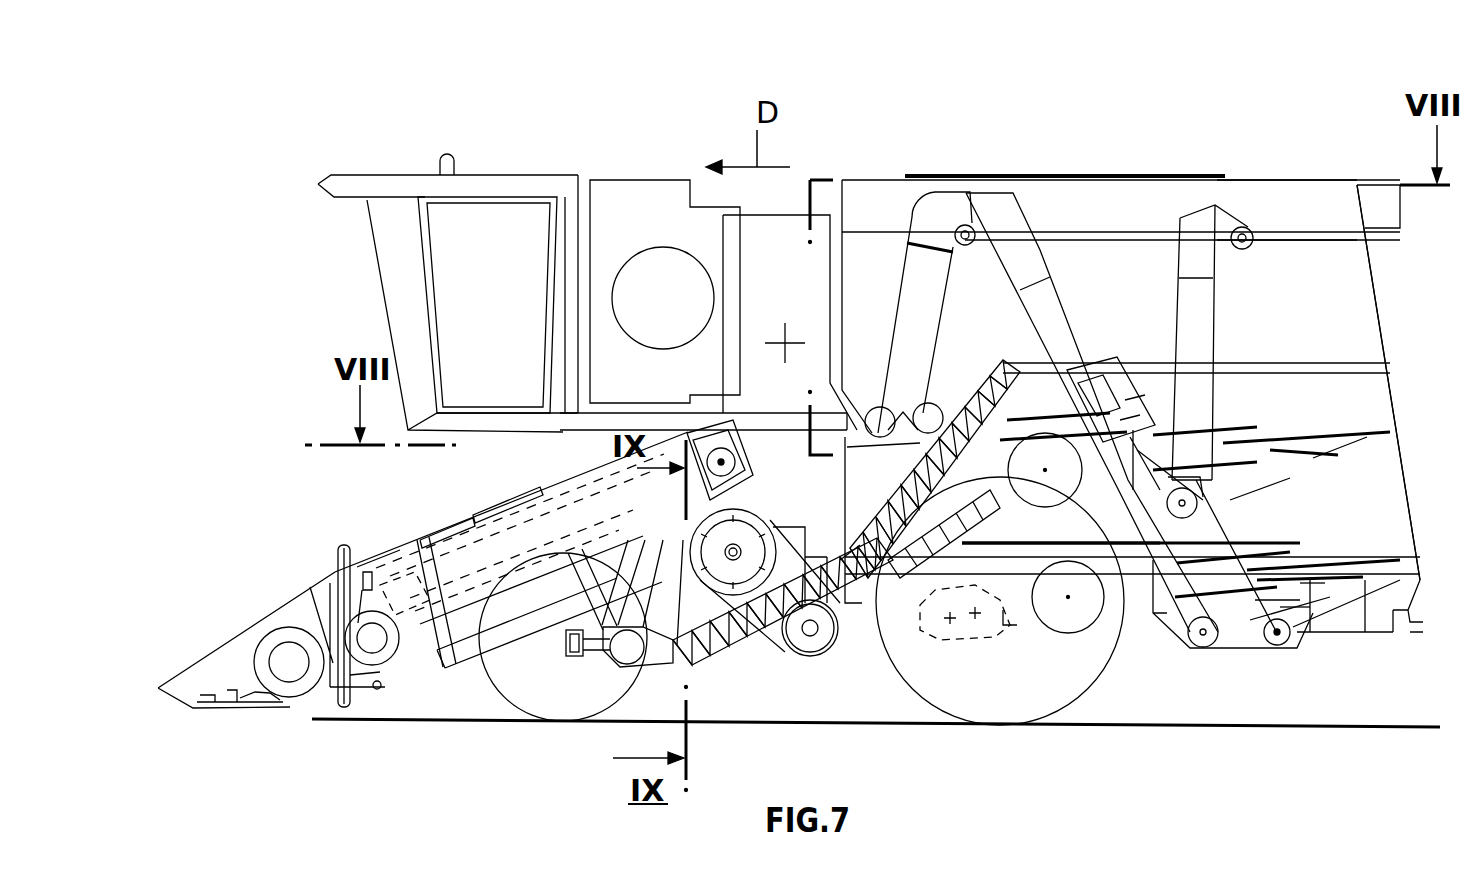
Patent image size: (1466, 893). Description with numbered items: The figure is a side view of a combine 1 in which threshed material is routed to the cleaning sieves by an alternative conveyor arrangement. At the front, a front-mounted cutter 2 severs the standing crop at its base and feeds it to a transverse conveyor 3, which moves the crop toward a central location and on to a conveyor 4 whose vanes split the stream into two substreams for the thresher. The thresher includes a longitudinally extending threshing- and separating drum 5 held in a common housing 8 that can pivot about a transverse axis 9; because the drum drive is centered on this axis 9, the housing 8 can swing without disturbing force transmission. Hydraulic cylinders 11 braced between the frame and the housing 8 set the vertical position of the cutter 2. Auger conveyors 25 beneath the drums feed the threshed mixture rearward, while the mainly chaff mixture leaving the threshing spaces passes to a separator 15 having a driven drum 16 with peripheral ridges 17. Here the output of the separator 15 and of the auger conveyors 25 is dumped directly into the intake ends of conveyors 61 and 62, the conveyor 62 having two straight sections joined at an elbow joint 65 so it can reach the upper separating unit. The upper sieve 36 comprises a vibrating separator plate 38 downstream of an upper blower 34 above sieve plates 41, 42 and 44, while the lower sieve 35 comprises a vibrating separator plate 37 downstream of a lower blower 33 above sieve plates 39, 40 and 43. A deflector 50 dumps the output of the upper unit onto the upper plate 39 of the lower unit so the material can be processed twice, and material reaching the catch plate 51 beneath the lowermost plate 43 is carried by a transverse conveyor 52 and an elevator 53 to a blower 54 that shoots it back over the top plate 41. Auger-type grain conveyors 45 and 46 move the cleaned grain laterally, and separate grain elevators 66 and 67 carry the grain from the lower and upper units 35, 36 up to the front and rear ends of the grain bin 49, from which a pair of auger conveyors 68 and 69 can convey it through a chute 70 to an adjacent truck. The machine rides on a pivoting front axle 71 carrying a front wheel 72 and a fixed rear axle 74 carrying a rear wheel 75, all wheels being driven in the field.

The combine 1 is at (670, 180).
The front-mounted cutter 2 is at (213, 707).
The transverse conveyor 3 is at (290, 697).
The conveyor 4 is at (385, 677).
The threshing- and separating drum 5 is at (437, 532).
The common housing 8 is at (462, 533).
The transverse axis 9 is at (735, 462).
The hydraulic cylinders 11 is at (598, 652).
The separator 15 is at (738, 570).
The driven drum 16 is at (748, 522).
The peripheral ridges 17 is at (742, 510).
The auger conveyors 25 is at (462, 650).
The lower blower 33 is at (1057, 633).
The upper blower 34 is at (1040, 497).
The lower sieve 35 is at (1223, 593).
The upper sieve 36 is at (1290, 560).
The vibrating separator plate 37 is at (1027, 543).
The vibrating separator plate 38 is at (1040, 420).
The sieve plate 39 is at (1227, 560).
The sieve plate 40 is at (1308, 557).
The sieve plate 41 is at (1217, 427).
The sieve plate 42 is at (1280, 427).
The sieve plate 43 is at (1312, 583).
The sieve plate 44 is at (1313, 427).
The auger-type grain conveyor 45 is at (1203, 647).
The auger-type grain conveyor 46 is at (1197, 500).
The grain bin 49 is at (1285, 267).
The deflector 50 is at (1358, 427).
The catch plate 51 is at (1345, 583).
The transverse conveyor 52 is at (1280, 643).
The elevator 53 is at (1130, 425).
The blower 54 is at (1087, 437).
The conveyor 61 is at (918, 545).
The conveyor 62 is at (974, 385).
The elbow joint 65 is at (860, 460).
The grain elevator 66 is at (1010, 212).
The grain elevator 67 is at (1190, 267).
The auger conveyor 68 is at (875, 420).
The auger conveyor 69 is at (922, 420).
The chute 70 is at (1317, 203).
The pivoting front axle 71 is at (570, 660).
The front wheel 72 is at (498, 700).
The fixed rear axle 74 is at (1013, 617).
The rear wheel 75 is at (1088, 700).